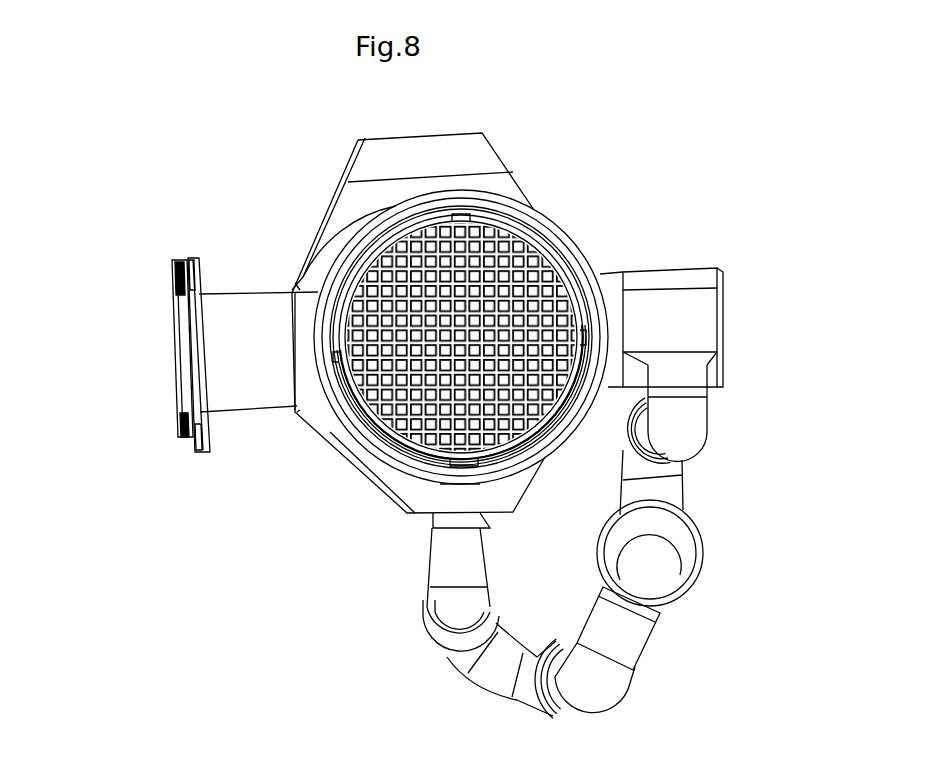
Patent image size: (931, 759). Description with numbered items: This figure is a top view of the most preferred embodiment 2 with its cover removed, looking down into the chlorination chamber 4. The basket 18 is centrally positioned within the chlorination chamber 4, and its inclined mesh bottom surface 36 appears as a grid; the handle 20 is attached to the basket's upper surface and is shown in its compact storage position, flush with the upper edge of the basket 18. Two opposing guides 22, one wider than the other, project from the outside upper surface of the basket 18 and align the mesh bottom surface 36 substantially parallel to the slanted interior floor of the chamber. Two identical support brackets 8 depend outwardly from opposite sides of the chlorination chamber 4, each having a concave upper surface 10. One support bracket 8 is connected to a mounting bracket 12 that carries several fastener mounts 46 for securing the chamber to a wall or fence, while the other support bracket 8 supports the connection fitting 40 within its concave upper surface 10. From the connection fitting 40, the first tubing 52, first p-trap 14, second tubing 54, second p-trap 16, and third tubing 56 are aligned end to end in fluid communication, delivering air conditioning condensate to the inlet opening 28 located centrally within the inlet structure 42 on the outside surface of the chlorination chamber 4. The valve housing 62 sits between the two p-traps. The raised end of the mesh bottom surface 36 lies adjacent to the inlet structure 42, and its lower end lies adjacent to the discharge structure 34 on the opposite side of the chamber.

The most preferred embodiment 2 is at (135, 110).
The chlorination chamber 4 is at (312, 262).
The support bracket 8 is at (612, 283).
The concave upper surface 10 is at (675, 272).
The mounting bracket 12 is at (160, 370).
The first p-trap 14 is at (700, 497).
The second p-trap 16 is at (490, 702).
The basket 18 is at (548, 262).
The handle 20 is at (505, 462).
The guides 22 is at (462, 200).
The inlet opening 28 is at (438, 527).
The discharge structure 34 is at (390, 167).
The mesh bottom surface 36 is at (380, 262).
The connection fitting 40 is at (700, 322).
The inlet structure 42 is at (478, 512).
The fastener mounts 46 is at (180, 252).
The first tubing 52 is at (700, 418).
The second tubing 54 is at (630, 700).
The third tubing 56 is at (432, 617).
The valve housing 62 is at (705, 557).